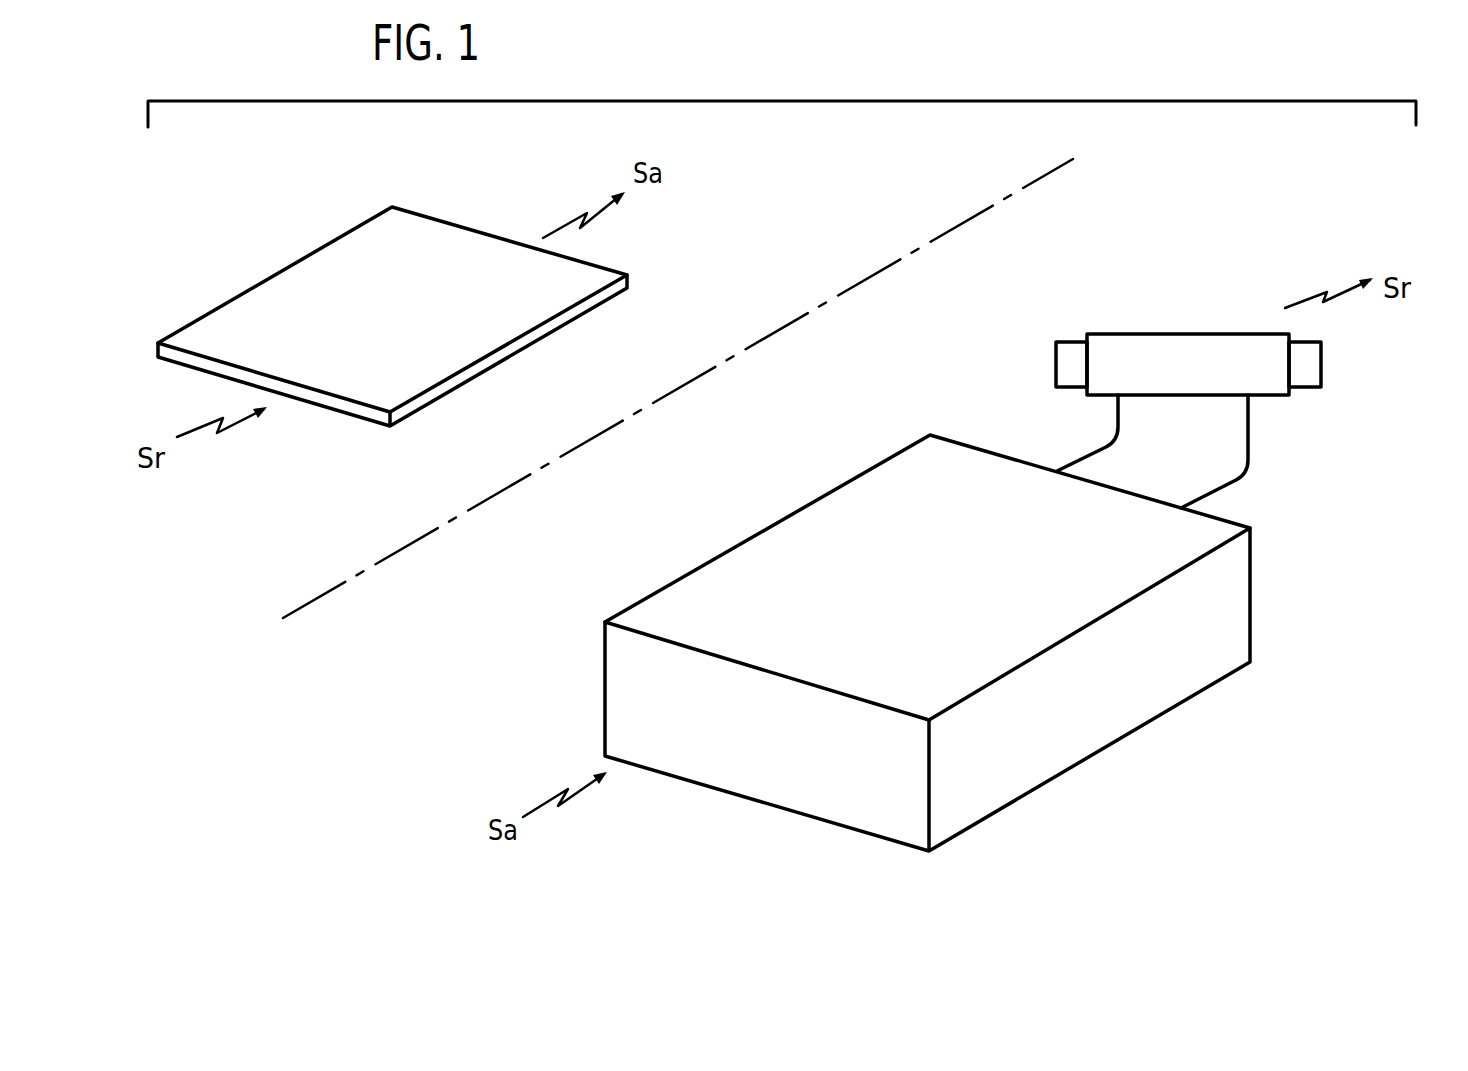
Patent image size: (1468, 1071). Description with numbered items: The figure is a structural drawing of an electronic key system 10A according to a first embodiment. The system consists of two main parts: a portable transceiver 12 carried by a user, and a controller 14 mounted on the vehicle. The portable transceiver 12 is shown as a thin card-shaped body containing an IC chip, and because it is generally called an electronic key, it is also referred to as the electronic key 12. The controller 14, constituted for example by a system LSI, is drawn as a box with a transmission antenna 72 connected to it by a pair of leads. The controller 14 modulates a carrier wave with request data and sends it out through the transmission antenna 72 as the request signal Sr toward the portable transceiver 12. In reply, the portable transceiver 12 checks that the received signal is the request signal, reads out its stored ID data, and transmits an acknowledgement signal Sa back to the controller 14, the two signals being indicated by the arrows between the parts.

The electronic key system 10A is at (856, 147).
The portable transceiver 12 is at (442, 233).
The controller 14 is at (972, 475).
The transmission antenna 72 is at (1238, 332).